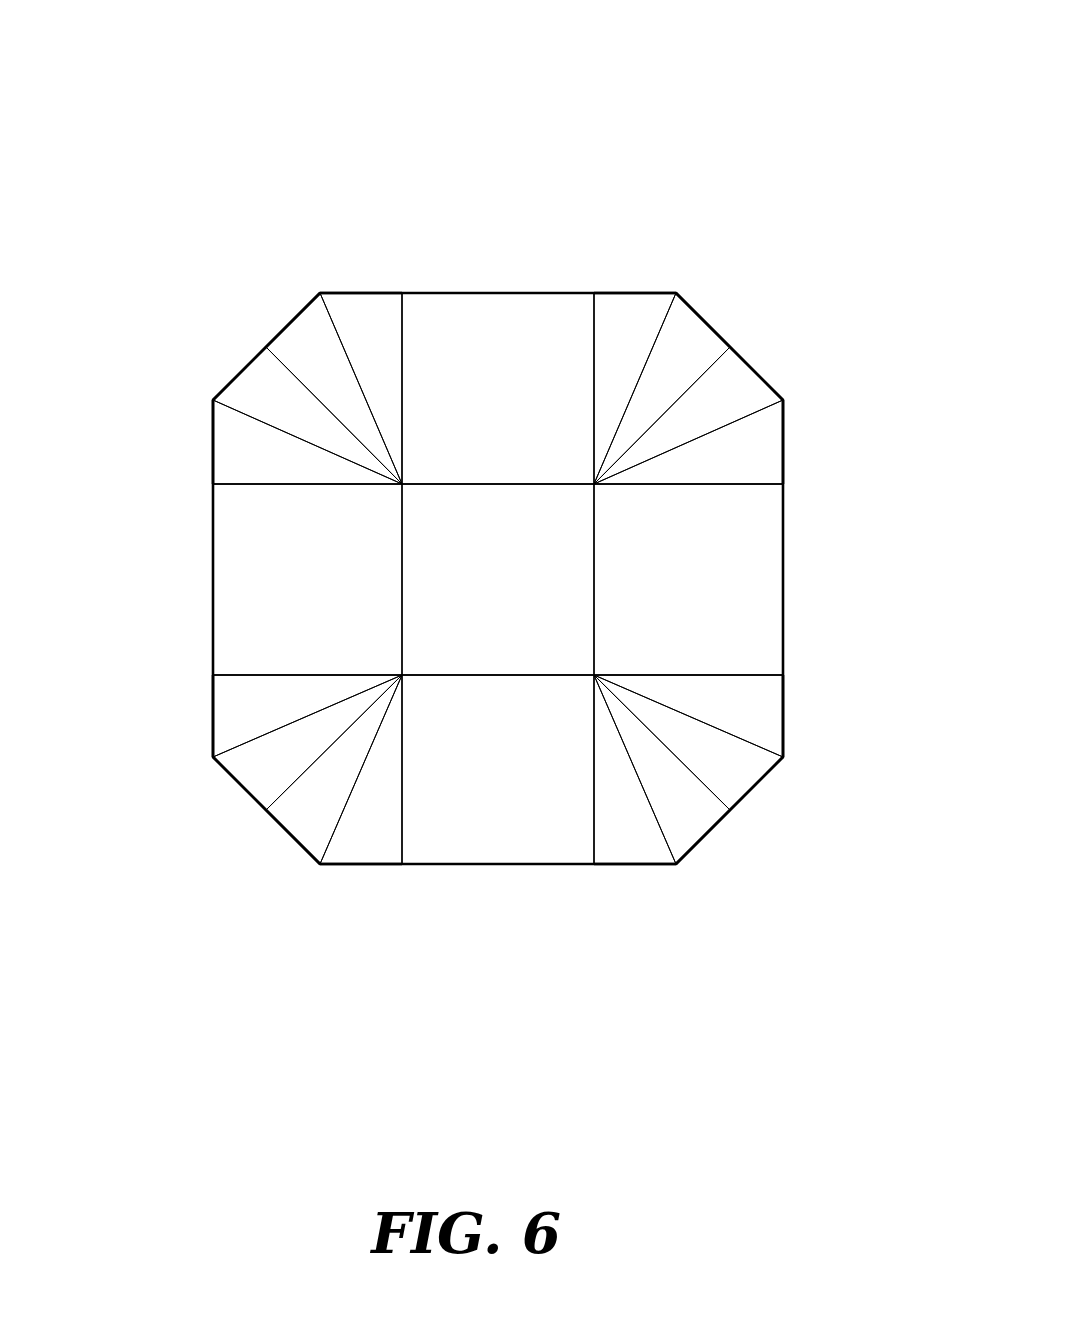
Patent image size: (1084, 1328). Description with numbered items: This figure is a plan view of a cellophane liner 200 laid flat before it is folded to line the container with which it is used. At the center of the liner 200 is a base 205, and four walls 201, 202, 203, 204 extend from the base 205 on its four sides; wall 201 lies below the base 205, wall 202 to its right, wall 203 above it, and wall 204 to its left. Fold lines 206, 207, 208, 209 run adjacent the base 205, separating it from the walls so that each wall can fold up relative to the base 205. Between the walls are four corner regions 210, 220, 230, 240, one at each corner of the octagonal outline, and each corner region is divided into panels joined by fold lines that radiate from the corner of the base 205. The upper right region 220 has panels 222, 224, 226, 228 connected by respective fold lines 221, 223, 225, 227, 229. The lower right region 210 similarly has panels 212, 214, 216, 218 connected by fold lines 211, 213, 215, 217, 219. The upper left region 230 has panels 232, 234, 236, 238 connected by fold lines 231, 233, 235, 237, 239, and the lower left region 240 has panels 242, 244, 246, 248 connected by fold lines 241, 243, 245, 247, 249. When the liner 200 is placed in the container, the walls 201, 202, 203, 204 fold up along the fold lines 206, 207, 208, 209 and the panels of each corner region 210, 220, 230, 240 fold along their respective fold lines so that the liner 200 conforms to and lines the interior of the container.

The cellophane liner 200 is at (312, 75).
The wall 201 is at (473, 843).
The wall 202 is at (713, 583).
The wall 203 is at (471, 338).
The wall 204 is at (238, 583).
The base 205 is at (473, 581).
The fold line 206 is at (483, 675).
The fold line 207 is at (594, 628).
The fold line 208 is at (483, 484).
The fold line 209 is at (402, 628).
The corner region 210 is at (799, 992).
The fold line 211 is at (592, 850).
The panel 212 is at (628, 857).
The fold line 213 is at (654, 865).
The panel 214 is at (688, 838).
The fold line 215 is at (723, 810).
The panel 216 is at (741, 778).
The fold line 217 is at (764, 757).
The panel 218 is at (774, 712).
The fold line 219 is at (763, 677).
The corner region 220 is at (798, 172).
The fold line 221 is at (761, 484).
The panel 222 is at (772, 446).
The fold line 223 is at (770, 386).
The panel 224 is at (741, 380).
The fold line 225 is at (723, 338).
The panel 226 is at (688, 318).
The fold line 227 is at (661, 320).
The panel 228 is at (630, 302).
The fold line 229 is at (586, 309).
The corner region 230 is at (198, 172).
The fold line 231 is at (410, 309).
The panel 232 is at (366, 302).
The fold line 233 is at (335, 320).
The panel 234 is at (308, 318).
The fold line 235 is at (273, 338).
The panel 236 is at (255, 380).
The fold line 237 is at (226, 386).
The panel 238 is at (224, 446).
The fold line 239 is at (235, 484).
The corner region 240 is at (197, 992).
The fold line 241 is at (233, 677).
The panel 242 is at (222, 712).
The fold line 243 is at (232, 757).
The panel 244 is at (255, 778).
The fold line 245 is at (273, 810).
The panel 246 is at (308, 838).
The fold line 247 is at (342, 865).
The panel 248 is at (368, 857).
The fold line 249 is at (404, 850).